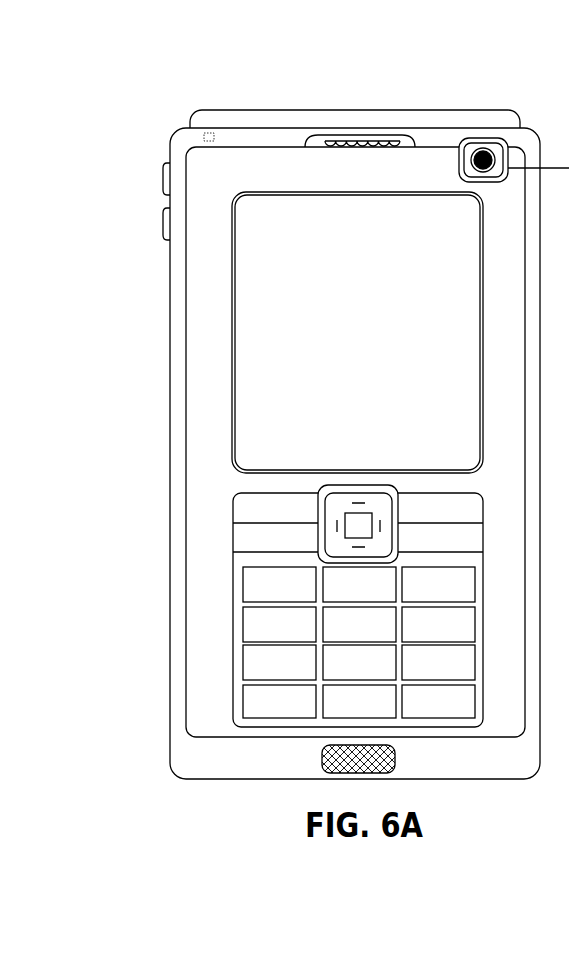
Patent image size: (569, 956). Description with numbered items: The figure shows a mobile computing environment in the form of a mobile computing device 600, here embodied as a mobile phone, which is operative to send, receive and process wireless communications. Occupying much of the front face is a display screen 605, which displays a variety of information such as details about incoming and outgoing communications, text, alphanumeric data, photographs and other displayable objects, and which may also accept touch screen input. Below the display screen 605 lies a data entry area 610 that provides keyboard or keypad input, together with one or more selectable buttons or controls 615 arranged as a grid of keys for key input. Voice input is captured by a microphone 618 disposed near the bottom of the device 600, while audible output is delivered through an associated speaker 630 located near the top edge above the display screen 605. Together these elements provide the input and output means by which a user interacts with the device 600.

The mobile computing device 600 is at (170, 132).
The speaker 630 is at (397, 138).
The display screen 605 is at (265, 318).
The data entry area 610 is at (233, 532).
The selectable buttons or controls 615 is at (253, 621).
The microphone 618 is at (322, 762).